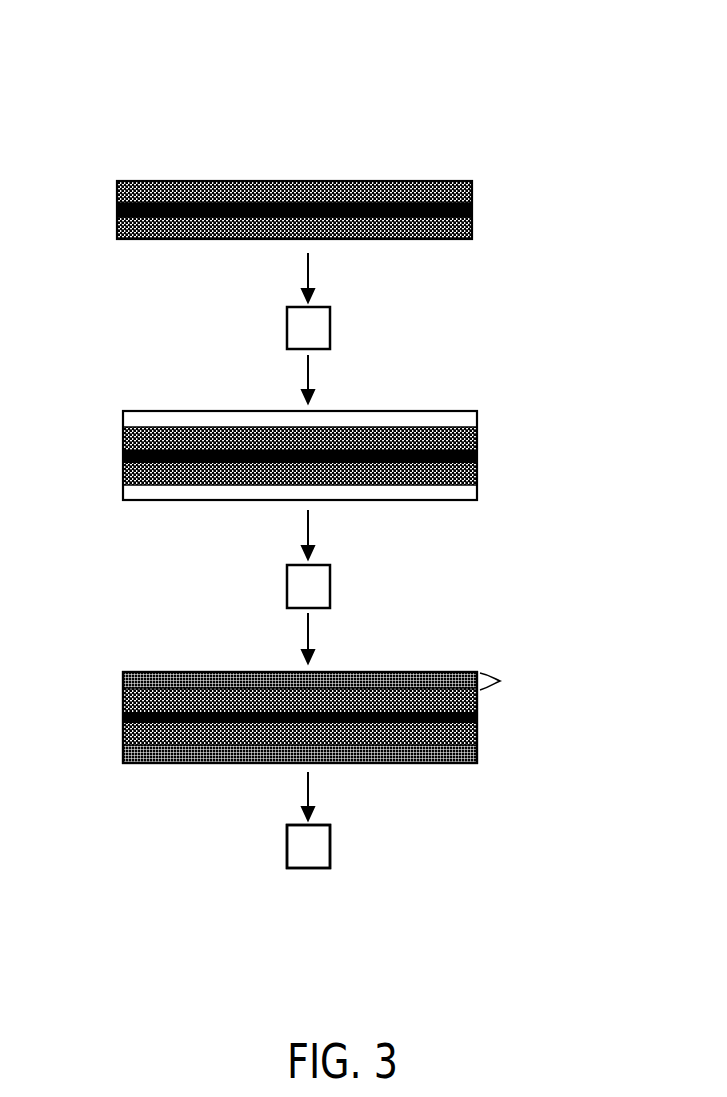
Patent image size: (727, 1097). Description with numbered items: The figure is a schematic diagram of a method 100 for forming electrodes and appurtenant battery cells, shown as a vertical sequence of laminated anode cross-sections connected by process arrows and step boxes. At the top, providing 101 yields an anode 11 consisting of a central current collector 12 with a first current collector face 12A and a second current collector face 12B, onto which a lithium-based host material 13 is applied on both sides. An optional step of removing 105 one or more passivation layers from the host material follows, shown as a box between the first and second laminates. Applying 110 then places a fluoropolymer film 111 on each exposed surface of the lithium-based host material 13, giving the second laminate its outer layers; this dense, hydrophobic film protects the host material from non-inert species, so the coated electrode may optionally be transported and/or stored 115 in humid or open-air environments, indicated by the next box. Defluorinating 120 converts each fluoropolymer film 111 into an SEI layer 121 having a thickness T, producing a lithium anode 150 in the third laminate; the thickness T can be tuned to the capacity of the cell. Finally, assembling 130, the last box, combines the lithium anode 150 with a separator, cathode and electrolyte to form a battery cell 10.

The method 100 is at (536, 88).
The anode 11 is at (111, 161).
The current collector 12 is at (117, 207).
The first current collector face 12A is at (192, 203).
The second current collector face 12B is at (192, 217).
The lithium-based host material 13 is at (468, 190).
The providing 101 is at (369, 178).
The removing 105 is at (376, 325).
The applying 110 is at (596, 449).
The fluoropolymer film 111 is at (128, 419).
The transporting and/or storing 115 is at (374, 584).
The defluorinating 120 is at (598, 711).
The SEI layer 121 is at (128, 679).
The thickness T is at (501, 681).
The lithium anode 150 is at (463, 630).
The assembling 130 is at (374, 845).
The battery cell 10 is at (279, 878).